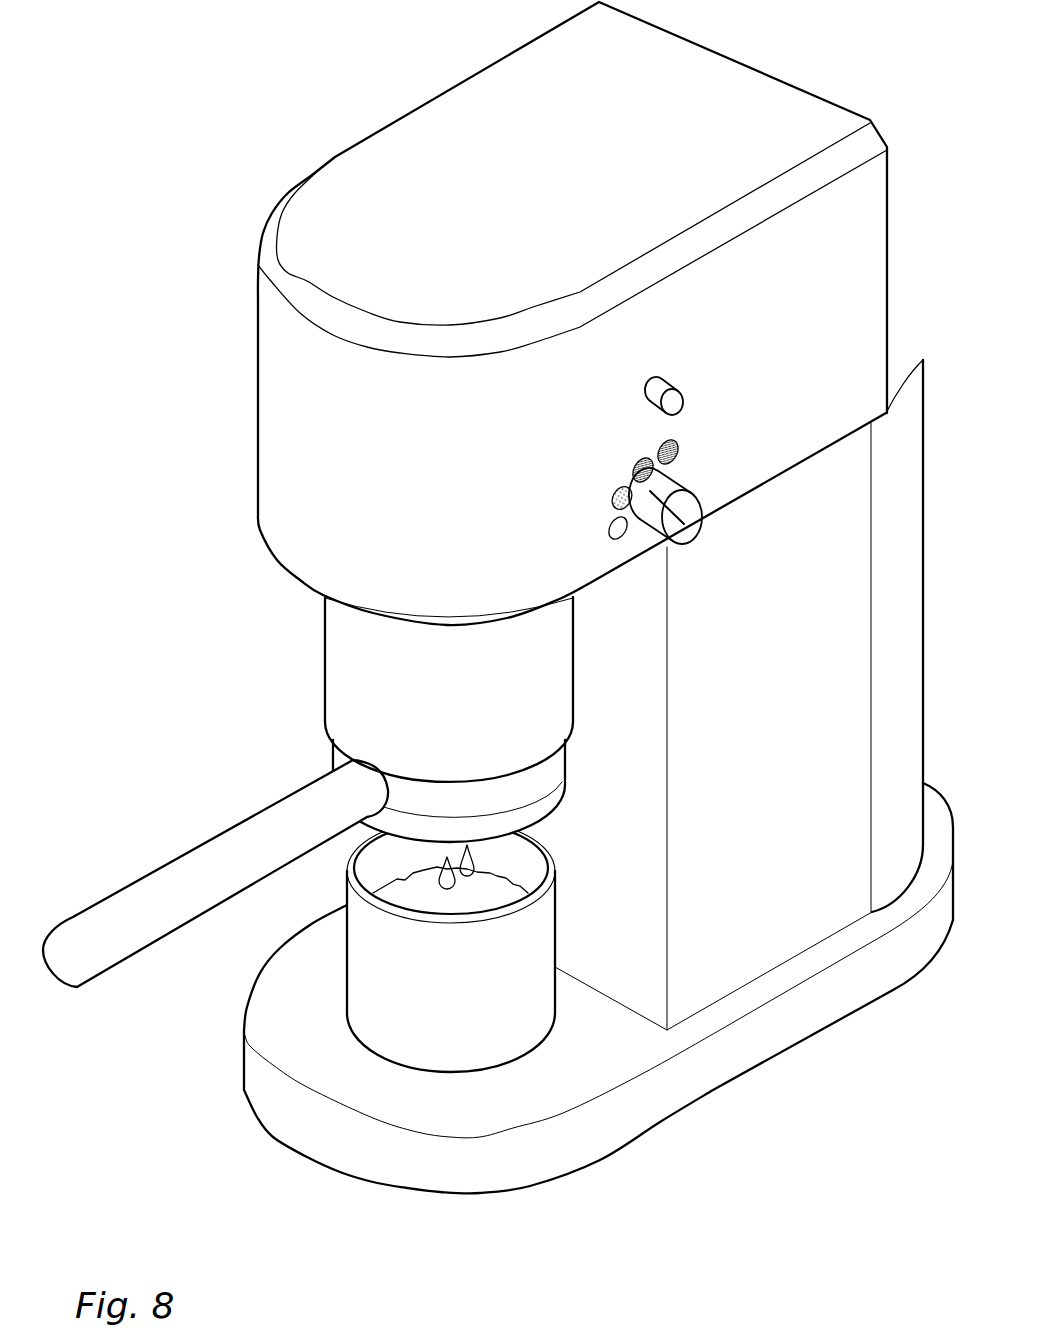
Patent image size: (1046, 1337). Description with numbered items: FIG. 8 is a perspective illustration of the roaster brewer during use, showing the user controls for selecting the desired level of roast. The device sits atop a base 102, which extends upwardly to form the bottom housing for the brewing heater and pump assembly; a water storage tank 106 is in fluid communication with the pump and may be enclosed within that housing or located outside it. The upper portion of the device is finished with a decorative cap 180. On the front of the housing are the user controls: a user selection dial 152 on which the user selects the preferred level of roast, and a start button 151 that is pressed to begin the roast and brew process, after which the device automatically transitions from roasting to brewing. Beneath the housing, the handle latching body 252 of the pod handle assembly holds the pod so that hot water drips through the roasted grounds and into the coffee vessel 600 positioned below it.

The base 102 is at (302, 1130).
The water storage tank 106 is at (898, 320).
The start button 151 is at (680, 401).
The user selection dial 152 is at (695, 505).
The decorative cap 180 is at (765, 85).
The handle latching body 252 is at (343, 755).
The coffee vessel 600 is at (378, 988).